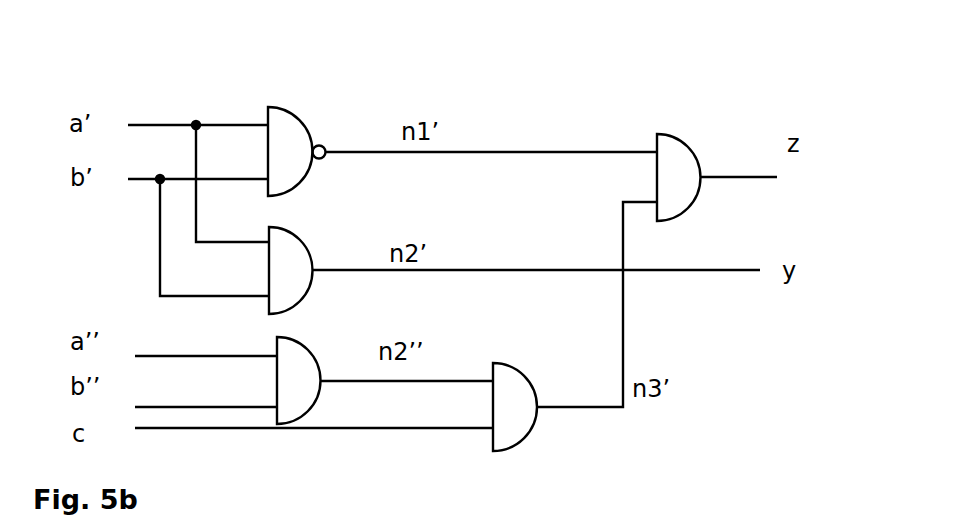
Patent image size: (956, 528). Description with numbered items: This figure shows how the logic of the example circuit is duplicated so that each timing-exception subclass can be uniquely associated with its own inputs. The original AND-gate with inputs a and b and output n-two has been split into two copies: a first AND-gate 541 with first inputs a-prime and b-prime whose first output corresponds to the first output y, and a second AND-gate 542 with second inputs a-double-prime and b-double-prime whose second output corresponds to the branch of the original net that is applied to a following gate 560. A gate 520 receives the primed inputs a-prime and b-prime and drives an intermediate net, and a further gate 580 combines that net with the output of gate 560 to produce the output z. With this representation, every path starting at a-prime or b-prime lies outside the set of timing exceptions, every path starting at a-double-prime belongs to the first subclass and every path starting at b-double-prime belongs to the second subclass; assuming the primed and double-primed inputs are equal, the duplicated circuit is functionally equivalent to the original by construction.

The NAND gate 520 is at (290, 147).
The first AND-gate 541 is at (293, 268).
The second AND-gate 542 is at (293, 380).
The AND gate 560 is at (508, 412).
The AND gate 580 is at (674, 157).